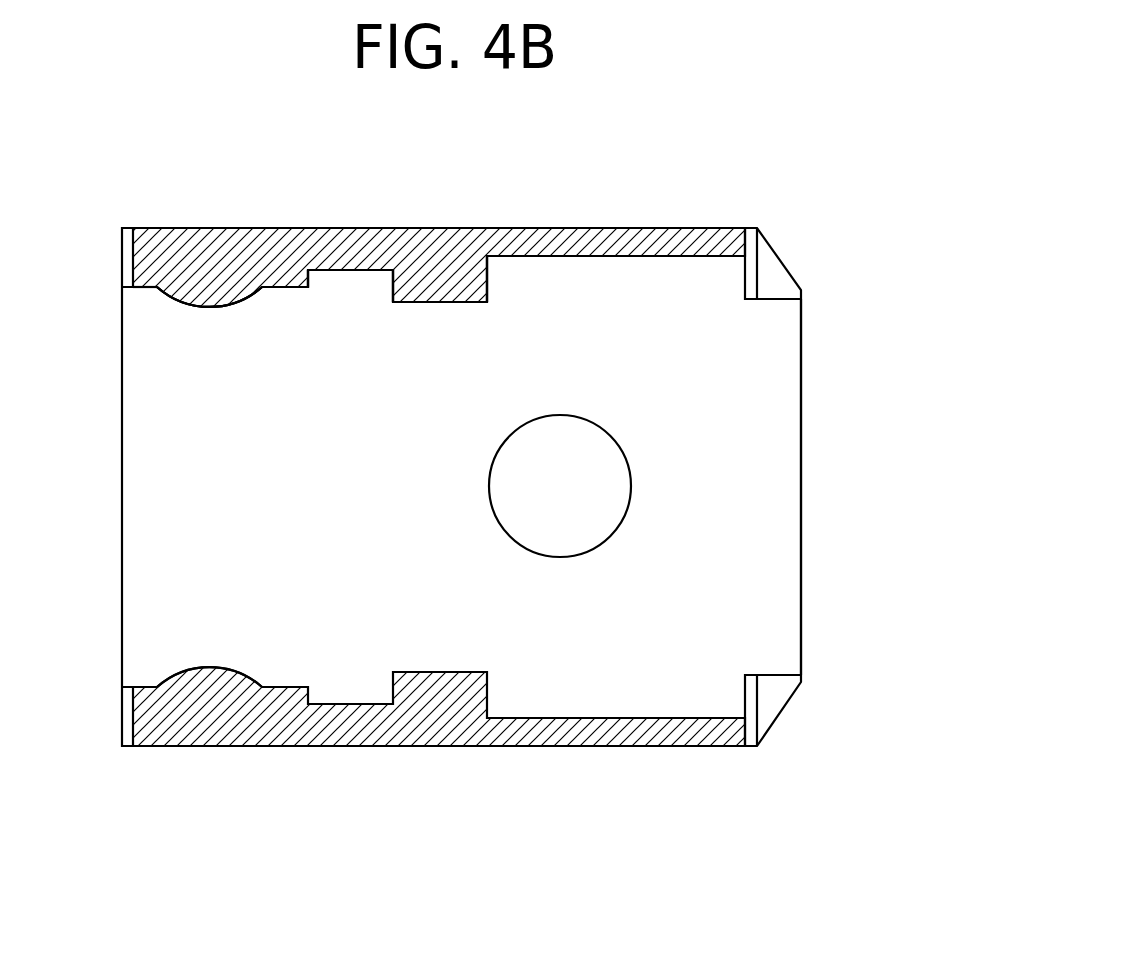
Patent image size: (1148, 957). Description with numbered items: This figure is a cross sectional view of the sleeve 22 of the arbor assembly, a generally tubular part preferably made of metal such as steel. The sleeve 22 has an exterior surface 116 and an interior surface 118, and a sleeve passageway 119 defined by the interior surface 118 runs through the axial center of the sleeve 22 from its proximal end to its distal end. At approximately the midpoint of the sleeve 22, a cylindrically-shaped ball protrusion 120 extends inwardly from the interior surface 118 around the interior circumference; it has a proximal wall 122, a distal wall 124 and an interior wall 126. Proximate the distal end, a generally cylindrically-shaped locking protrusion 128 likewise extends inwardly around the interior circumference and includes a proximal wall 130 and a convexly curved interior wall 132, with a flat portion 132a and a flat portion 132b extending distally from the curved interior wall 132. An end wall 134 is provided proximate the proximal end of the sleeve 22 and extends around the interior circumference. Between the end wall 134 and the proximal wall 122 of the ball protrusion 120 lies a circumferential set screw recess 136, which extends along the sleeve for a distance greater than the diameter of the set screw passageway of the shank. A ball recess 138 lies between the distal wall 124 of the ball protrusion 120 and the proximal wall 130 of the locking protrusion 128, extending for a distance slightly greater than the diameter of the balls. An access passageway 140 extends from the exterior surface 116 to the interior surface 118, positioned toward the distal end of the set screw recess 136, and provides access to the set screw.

The sleeve 22 is at (785, 768).
The exterior surface 116 is at (637, 228).
The interior surface 118 is at (590, 262).
The sleeve passageway 119 is at (778, 416).
The ball protrusion 120 is at (440, 302).
The proximal wall 122 is at (489, 257).
The distal wall 124 is at (391, 284).
The interior wall 126 is at (427, 303).
The locking protrusion 128 is at (210, 305).
The proximal wall 130 is at (324, 284).
The convexly curved interior wall 132 is at (244, 300).
The flat portion 132a is at (146, 290).
The flat portion 132b is at (293, 288).
The end wall 134 is at (744, 290).
The set screw recess 136 is at (665, 257).
The ball recess 138 is at (344, 272).
The access passageway 140 is at (597, 428).